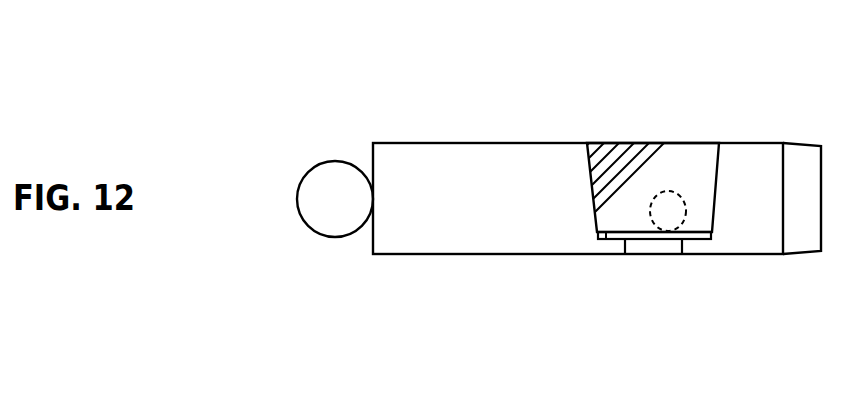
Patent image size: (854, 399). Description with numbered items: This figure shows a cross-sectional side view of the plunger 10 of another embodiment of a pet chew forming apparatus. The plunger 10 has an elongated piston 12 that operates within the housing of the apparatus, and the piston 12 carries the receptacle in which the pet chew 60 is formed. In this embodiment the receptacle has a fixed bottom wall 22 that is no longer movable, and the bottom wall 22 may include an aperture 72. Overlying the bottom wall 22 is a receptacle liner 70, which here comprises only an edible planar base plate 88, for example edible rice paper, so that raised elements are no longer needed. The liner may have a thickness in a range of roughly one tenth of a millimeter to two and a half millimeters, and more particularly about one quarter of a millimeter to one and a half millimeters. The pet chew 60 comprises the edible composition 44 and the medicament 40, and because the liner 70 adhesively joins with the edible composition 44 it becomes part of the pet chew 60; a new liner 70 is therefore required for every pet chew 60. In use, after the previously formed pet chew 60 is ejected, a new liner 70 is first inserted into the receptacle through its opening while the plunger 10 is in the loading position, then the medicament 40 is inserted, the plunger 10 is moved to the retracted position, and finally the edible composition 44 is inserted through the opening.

The plunger 10 is at (475, 133).
The elongated piston 12 is at (408, 255).
The bottom wall 22 is at (700, 250).
The medicament 40 is at (676, 193).
The edible composition 44 is at (615, 168).
The pet chew 60 is at (647, 137).
The receptacle liner 70 is at (578, 227).
The aperture 72 is at (652, 245).
The edible planar base plate 88 is at (605, 241).